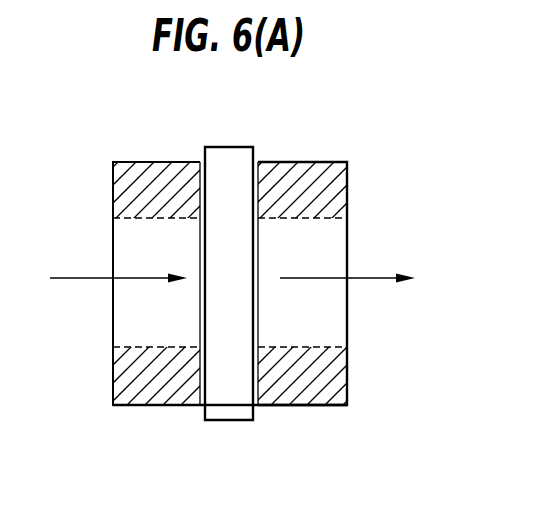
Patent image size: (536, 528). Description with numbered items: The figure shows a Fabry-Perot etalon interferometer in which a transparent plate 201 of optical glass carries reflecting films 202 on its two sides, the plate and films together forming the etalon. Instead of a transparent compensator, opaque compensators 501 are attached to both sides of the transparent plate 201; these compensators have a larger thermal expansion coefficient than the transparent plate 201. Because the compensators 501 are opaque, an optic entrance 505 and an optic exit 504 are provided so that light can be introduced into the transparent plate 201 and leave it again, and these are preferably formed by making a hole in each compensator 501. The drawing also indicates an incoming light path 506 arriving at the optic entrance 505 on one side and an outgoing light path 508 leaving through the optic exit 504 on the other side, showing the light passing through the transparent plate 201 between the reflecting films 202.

The transparent plate 201 is at (229, 174).
The reflecting films 202 is at (204, 246).
The opaque compensators 501 is at (160, 172).
The optic exit 504 is at (348, 327).
The optic entrance 505 is at (128, 327).
The incident light 506 is at (90, 277).
The emitted light 508 is at (386, 275).